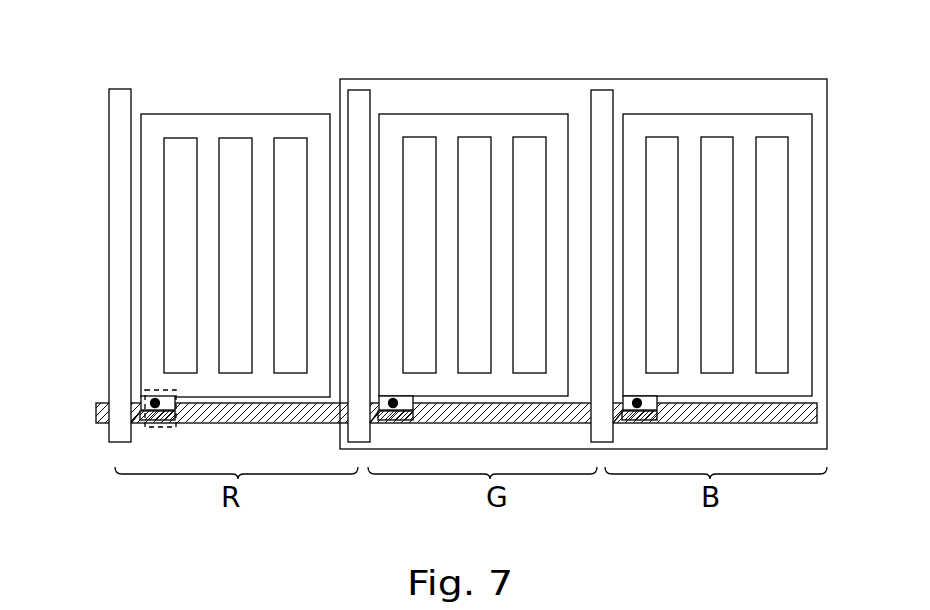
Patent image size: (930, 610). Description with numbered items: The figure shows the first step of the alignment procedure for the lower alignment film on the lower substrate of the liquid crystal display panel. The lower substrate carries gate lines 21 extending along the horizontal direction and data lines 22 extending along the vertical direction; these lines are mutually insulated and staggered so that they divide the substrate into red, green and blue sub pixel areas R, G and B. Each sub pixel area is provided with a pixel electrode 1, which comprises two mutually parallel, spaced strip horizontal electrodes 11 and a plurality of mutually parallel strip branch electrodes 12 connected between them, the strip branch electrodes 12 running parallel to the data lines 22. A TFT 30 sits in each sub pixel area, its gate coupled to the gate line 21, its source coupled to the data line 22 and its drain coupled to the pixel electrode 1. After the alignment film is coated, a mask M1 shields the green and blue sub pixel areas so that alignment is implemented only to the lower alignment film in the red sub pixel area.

The pixel electrode 1 is at (186, 249).
The strip horizontal electrode 11 is at (210, 125).
The strip branch electrode 12 is at (153, 188).
The gate line 21 is at (802, 412).
The data line 22 is at (122, 275).
The TFT 30 is at (137, 393).
The mask M1 is at (583, 79).